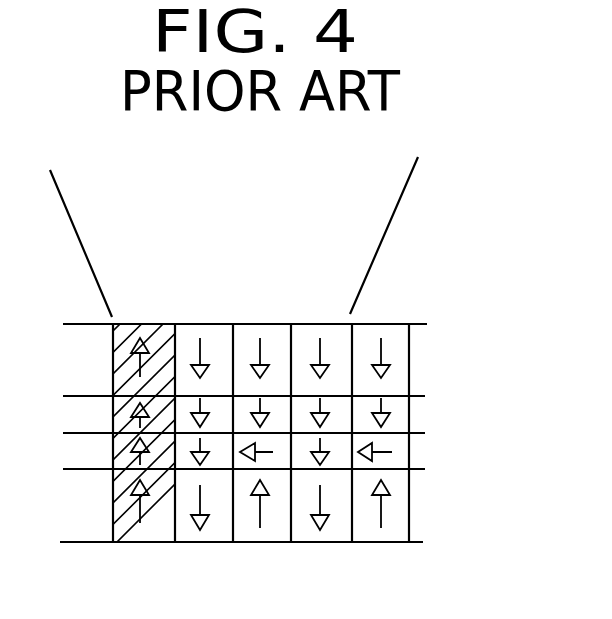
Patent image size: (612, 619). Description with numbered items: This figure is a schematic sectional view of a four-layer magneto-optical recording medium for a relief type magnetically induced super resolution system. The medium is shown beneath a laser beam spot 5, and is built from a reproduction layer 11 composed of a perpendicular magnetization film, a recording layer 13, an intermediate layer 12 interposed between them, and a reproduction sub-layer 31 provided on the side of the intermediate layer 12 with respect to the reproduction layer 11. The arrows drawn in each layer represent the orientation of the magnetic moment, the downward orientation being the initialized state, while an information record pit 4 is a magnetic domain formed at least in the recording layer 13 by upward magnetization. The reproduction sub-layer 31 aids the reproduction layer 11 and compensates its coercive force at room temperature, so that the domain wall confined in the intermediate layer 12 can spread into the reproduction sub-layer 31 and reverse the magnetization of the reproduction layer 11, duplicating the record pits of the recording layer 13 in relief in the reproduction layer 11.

The information record pit 4 is at (151, 323).
The laser beam spot 5 is at (325, 273).
The reproduction layer 11 is at (417, 359).
The reproduction sub-layer 31 is at (417, 413).
The intermediate layer 12 is at (417, 452).
The recording layer 13 is at (402, 530).